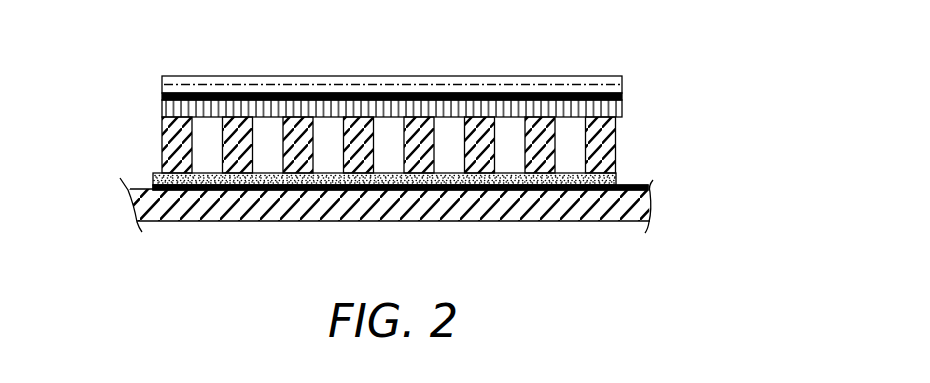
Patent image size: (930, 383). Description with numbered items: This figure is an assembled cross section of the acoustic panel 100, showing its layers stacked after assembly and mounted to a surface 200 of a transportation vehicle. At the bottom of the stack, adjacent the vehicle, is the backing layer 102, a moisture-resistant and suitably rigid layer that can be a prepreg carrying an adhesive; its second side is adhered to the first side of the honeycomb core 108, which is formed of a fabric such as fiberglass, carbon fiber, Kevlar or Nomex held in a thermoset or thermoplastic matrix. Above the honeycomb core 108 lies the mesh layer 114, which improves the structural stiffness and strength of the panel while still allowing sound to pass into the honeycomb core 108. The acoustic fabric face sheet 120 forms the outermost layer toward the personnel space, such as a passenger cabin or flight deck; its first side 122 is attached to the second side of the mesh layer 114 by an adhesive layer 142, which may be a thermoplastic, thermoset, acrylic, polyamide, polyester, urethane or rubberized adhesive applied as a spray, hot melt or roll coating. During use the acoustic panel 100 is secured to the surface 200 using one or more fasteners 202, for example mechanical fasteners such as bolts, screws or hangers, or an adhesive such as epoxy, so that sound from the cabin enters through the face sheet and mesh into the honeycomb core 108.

The acoustic panel 100 is at (156, 59).
The backing layer 102 is at (617, 180).
The honeycomb core 108 is at (632, 142).
The mesh layer 114 is at (623, 112).
The acoustic fabric face sheet 120 is at (520, 83).
The first side of the acoustic fabric face sheet 122 is at (265, 160).
The adhesive layer 142 is at (598, 93).
The surface 200 is at (476, 212).
The fasteners 202 is at (332, 189).